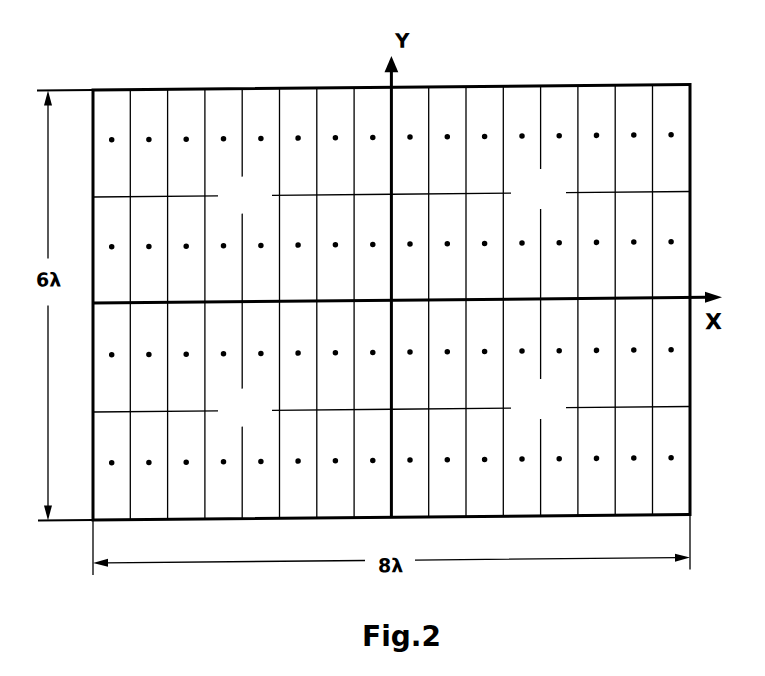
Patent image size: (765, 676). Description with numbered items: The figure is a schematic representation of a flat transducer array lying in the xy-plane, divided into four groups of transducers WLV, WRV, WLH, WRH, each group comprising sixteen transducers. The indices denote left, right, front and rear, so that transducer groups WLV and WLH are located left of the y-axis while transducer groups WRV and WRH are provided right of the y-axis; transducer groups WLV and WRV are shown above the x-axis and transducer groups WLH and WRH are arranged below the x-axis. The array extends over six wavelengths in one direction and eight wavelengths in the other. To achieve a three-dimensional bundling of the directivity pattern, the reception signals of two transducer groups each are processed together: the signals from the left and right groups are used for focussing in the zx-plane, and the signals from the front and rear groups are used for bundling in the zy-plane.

The left front transducer group WLV is at (242, 195).
The right front transducer group WRV is at (540, 193).
The left rear transducer group WLH is at (242, 410).
The right rear transducer group WRH is at (540, 408).